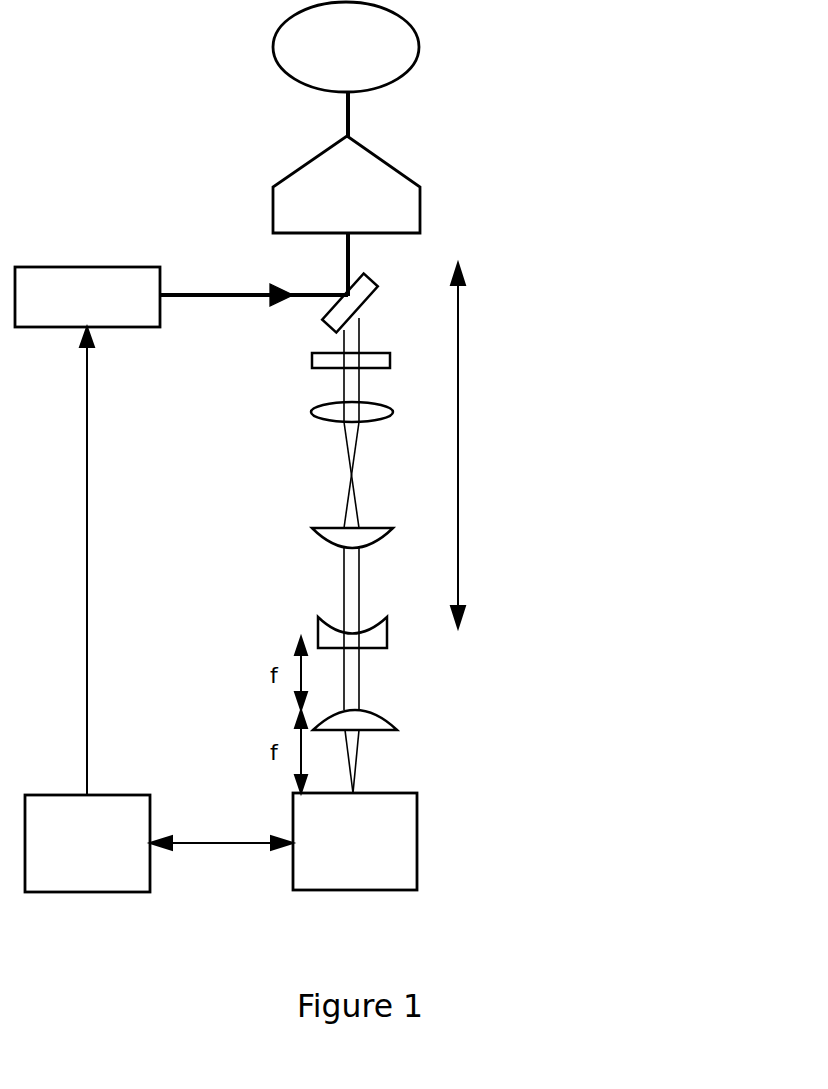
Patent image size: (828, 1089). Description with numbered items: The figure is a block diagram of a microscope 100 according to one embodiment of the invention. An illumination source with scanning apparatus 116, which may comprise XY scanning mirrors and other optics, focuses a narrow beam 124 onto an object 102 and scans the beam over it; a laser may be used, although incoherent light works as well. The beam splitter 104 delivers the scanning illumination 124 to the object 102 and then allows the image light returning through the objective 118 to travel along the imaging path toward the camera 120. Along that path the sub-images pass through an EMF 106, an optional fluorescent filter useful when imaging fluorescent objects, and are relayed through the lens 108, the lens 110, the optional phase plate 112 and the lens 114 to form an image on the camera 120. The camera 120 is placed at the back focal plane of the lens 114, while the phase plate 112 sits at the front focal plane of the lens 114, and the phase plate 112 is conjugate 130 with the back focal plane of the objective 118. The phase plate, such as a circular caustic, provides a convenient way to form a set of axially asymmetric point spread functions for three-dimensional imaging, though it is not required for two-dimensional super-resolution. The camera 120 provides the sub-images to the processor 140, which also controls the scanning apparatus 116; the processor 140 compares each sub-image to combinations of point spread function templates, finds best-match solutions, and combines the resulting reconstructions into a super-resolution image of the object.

The microscope 100 is at (150, 76).
The object 102 is at (346, 47).
The objective 118 is at (346, 184).
The beam splitter 104 is at (375, 303).
The EMF 106 is at (380, 354).
The lens 108 is at (379, 407).
The lens 110 is at (381, 529).
The phase plate 112 is at (374, 632).
The lens 114 is at (388, 723).
The illumination source with scanning apparatus 116 is at (87, 297).
The camera 120 is at (355, 841).
The narrow beam 124 is at (254, 284).
The conjugate 130 is at (488, 445).
The processor 140 is at (87, 843).